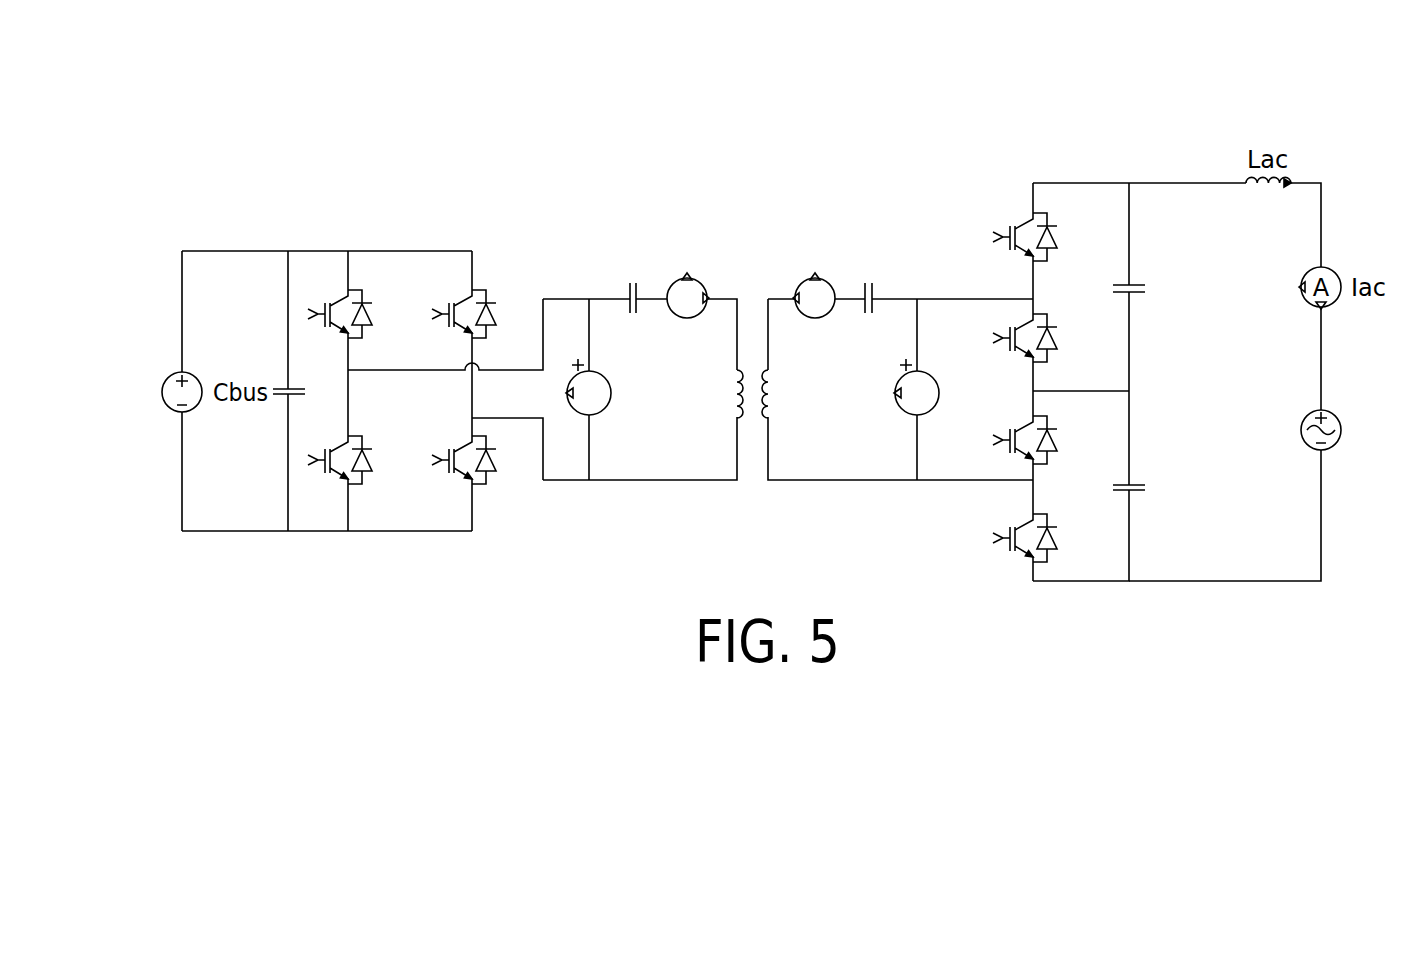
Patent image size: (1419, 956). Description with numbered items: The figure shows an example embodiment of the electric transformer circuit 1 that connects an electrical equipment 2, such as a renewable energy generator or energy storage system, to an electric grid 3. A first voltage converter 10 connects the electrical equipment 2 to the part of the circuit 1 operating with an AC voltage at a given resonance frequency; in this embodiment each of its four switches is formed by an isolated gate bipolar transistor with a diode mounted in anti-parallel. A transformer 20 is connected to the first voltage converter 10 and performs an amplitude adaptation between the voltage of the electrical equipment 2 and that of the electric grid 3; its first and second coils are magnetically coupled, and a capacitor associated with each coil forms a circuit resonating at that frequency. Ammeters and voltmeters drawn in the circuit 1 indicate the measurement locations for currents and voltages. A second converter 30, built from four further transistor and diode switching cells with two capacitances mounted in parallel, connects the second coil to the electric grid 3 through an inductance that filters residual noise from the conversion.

The electric transformer circuit 1 is at (1155, 122).
The electrical equipment 2 is at (170, 378).
The electric grid 3 is at (1305, 418).
The first voltage converter 10 is at (500, 545).
The transformer 20 is at (922, 497).
The second converter 30 is at (1008, 168).